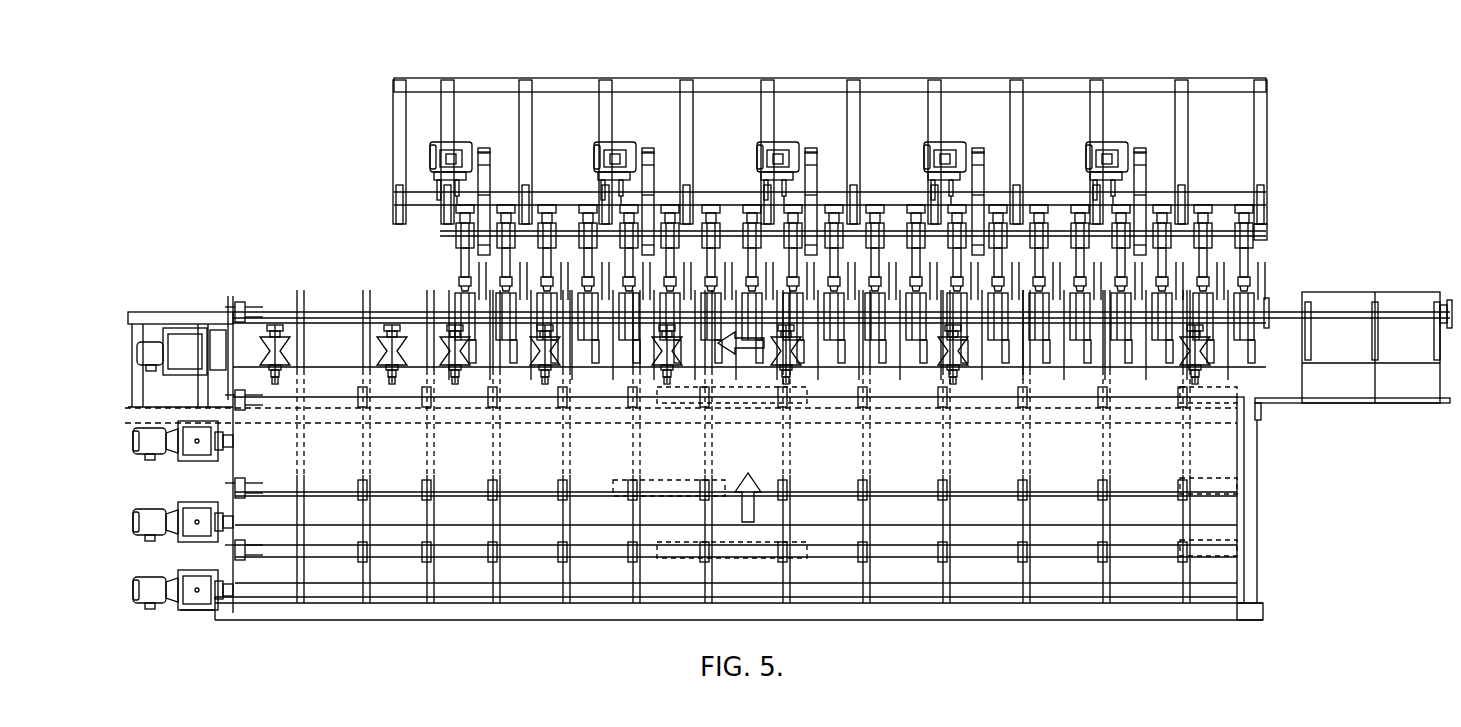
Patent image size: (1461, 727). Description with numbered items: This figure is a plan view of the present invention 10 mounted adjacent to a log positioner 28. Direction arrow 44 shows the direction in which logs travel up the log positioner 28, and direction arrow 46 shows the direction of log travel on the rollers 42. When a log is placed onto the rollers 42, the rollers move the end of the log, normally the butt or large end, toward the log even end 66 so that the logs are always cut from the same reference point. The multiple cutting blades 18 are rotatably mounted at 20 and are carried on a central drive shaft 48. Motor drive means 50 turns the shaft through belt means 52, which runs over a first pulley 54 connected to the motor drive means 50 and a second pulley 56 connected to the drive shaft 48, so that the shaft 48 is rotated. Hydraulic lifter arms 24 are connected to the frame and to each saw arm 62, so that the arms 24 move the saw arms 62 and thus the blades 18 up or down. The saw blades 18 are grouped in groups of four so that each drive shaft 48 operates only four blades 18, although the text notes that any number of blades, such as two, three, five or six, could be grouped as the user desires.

The present invention 10 is at (1340, 117).
The cutting blades 18 is at (602, 368).
The rotatable mounting 20 is at (582, 335).
The hydraulic lifter arms 24 is at (462, 240).
The log positioner 28 is at (1284, 483).
The rollers 42 is at (413, 358).
The direction arrow 44 is at (752, 505).
The direction arrow 46 is at (748, 350).
The central drive shaft 48 is at (566, 215).
The motor drive means 50 is at (430, 152).
The belt means 52 is at (492, 176).
The first pulley 54 is at (484, 149).
The second pulley 56 is at (482, 272).
The saw arm 62 is at (462, 258).
The log even end 66 is at (245, 300).